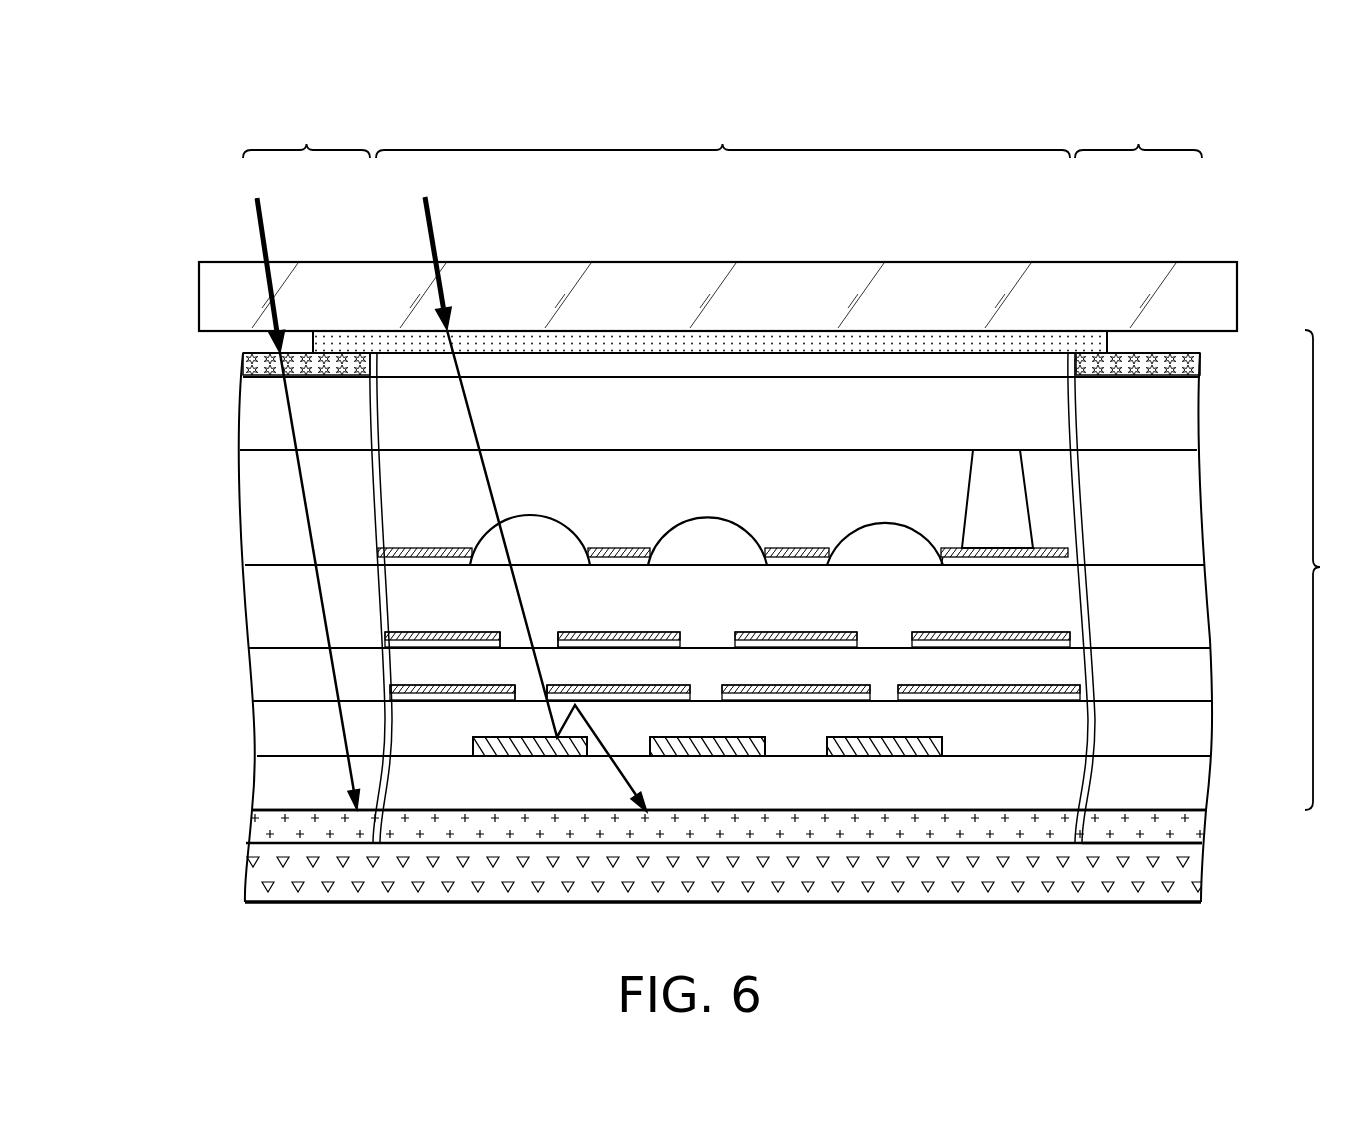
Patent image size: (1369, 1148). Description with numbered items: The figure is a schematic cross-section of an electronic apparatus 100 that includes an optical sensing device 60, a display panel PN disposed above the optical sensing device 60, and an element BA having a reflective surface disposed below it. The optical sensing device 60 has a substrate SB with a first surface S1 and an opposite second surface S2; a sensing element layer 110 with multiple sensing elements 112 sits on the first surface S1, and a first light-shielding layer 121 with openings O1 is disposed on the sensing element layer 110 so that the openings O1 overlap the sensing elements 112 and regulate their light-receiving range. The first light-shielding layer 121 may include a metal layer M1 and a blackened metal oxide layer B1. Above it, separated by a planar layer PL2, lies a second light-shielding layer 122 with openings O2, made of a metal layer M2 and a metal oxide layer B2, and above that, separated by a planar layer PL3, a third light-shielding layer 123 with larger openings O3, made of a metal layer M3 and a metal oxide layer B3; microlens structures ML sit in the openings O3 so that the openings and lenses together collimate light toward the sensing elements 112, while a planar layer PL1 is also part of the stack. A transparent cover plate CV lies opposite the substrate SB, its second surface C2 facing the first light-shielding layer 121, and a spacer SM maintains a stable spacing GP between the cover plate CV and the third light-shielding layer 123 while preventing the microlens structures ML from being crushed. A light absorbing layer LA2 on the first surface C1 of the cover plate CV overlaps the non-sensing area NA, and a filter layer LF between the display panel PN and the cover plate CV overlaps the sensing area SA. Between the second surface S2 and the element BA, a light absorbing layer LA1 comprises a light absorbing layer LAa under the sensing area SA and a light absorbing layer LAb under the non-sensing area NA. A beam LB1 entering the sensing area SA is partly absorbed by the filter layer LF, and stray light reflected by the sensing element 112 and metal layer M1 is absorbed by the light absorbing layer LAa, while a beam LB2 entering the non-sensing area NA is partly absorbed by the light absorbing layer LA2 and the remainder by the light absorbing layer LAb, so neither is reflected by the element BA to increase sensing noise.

The electronic apparatus 100 is at (1355, 983).
The optical sensing device 60 is at (1331, 570).
The non-sensing area NA is at (722, 132).
The sensing area SA is at (723, 132).
The beam LB1 is at (427, 219).
The beam LB2 is at (258, 221).
The light absorbing layer LA1 is at (100, 163).
The light absorbing layer LAa is at (793, 832).
The light absorbing layer LAb is at (270, 824).
The display panel PN is at (228, 296).
The filter layer LF is at (1087, 342).
The light absorbing layer LA2 is at (243, 362).
The first surface C1 is at (1157, 377).
The cover plate CV is at (258, 408).
The second surface C2 is at (1157, 453).
The spacing GP is at (1183, 527).
The spacer SM is at (998, 460).
The microlens structure ML is at (540, 522).
The third light-shielding layer 123 is at (657, 497).
The metal oxide layer B3 is at (360, 543).
The metal layer M3 is at (374, 555).
The opening O3 is at (938, 558).
The planar layer PL3 is at (262, 572).
The second light-shielding layer 122 is at (662, 593).
The metal oxide layer B2 is at (460, 627).
The metal layer M2 is at (393, 646).
The opening O2 is at (908, 642).
The planar layer PL2 is at (263, 660).
The first light-shielding layer 121 is at (665, 673).
The metal oxide layer B1 is at (450, 682).
The metal layer M1 is at (393, 699).
The opening O1 is at (875, 693).
The sensing element layer 110 is at (663, 745).
The planar layer PL1 is at (268, 715).
The sensing element 112 is at (473, 748).
The first surface S1 is at (1157, 753).
The substrate SB is at (263, 789).
The second surface S2 is at (1155, 812).
The element having a reflective surface BA is at (270, 878).